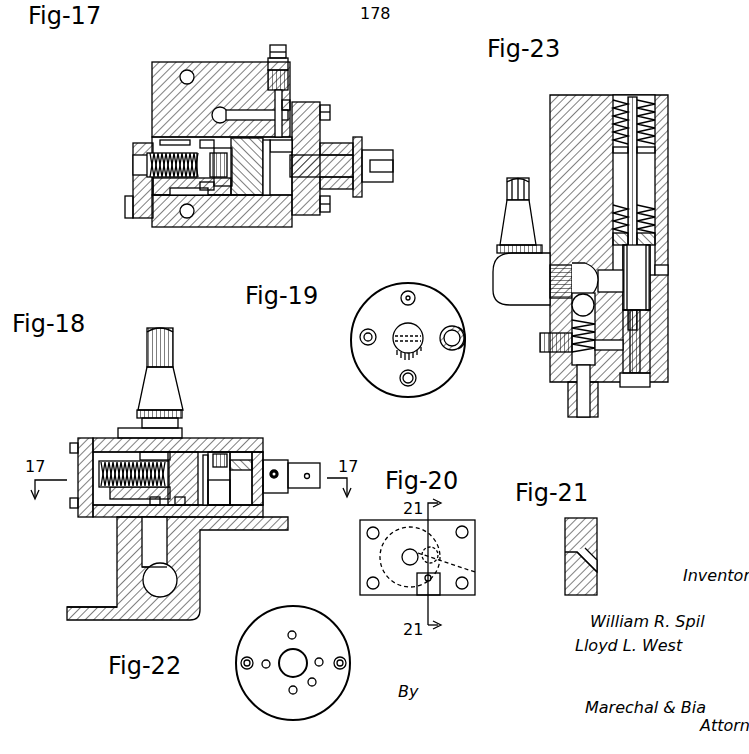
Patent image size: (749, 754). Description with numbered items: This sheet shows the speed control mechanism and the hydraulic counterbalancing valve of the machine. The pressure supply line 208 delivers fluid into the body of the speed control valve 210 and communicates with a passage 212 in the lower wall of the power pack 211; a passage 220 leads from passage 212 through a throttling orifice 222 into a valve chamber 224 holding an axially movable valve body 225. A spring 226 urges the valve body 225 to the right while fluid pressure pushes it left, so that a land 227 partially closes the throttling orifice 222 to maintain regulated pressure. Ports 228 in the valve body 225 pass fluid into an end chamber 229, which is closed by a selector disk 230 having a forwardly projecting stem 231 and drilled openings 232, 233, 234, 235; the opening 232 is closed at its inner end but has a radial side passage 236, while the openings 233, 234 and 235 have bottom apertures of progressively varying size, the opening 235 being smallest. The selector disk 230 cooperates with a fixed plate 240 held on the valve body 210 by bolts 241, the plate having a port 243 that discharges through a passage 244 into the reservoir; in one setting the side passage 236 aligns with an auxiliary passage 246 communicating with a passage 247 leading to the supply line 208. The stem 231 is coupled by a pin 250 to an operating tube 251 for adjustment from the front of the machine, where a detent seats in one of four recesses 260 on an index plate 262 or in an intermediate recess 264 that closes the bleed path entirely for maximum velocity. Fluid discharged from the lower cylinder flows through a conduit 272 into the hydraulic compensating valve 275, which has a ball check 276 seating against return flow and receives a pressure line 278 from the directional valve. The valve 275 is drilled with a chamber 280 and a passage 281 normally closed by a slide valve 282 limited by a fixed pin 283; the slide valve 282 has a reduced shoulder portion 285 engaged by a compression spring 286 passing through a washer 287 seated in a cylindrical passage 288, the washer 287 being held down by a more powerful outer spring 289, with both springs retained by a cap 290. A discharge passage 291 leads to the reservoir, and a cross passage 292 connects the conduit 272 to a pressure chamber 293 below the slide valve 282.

In FIG. 17, the pressure supply line 208 is at (212, 114).
In FIG. 18, the pressure supply line 208 is at (173, 336).
In FIG. 17, the speed control valve 210 is at (152, 66).
In FIG. 18, the power pack 211 is at (192, 600).
In FIG. 18, the passage 212 is at (177, 580).
In FIG. 18, the passage 220 is at (165, 550).
In FIG. 18, the throttling orifice 222 is at (125, 547).
In FIG. 18, the valve chamber 224 is at (150, 452).
In FIG. 18, the valve body 225 is at (110, 519).
In FIG. 17, the spring 226 is at (140, 163).
In FIG. 18, the spring 226 is at (97, 474).
In FIG. 18, the land 227 is at (172, 514).
In FIG. 17, the port 228 is at (228, 196).
In FIG. 18, the port 228 is at (195, 530).
In FIG. 18, the end chamber 229 is at (205, 455).
In FIG. 18, the selector disk 230 is at (228, 498).
In FIG. 19, the selector disk 230 is at (437, 298).
In FIG. 17, the stem 231 is at (394, 166).
In FIG. 18, the stem 231 is at (313, 489).
In FIG. 19, the stem 231 is at (416, 347).
In FIG. 17, the opening 232 is at (277, 196).
In FIG. 19, the opening 232 is at (462, 350).
In FIG. 19, the opening 233 is at (408, 386).
In FIG. 18, the opening 234 is at (228, 455).
In FIG. 19, the opening 234 is at (360, 338).
In FIG. 19, the opening 235 is at (408, 291).
In FIG. 17, the side passage 236 is at (288, 145).
In FIG. 19, the side passage 236 is at (460, 338).
In FIG. 23, the side passage 236 is at (540, 343).
In FIG. 17, the fixed plate 240 is at (312, 216).
In FIG. 20, the fixed plate 240 is at (470, 549).
In FIG. 21, the fixed plate 240 is at (598, 534).
In FIG. 17, the bolts 241 is at (331, 112).
In FIG. 18, the bolts 241 is at (268, 447).
In FIG. 18, the port 243 is at (250, 455).
In FIG. 20, the port 243 is at (475, 572).
In FIG. 21, the port 243 is at (567, 560).
In FIG. 20, the passage 244 is at (430, 580).
In FIG. 21, the passage 244 is at (594, 575).
In FIG. 17, the auxiliary passage 246 is at (283, 93).
In FIG. 17, the passage 247 is at (290, 106).
In FIG. 17, the pin 250 is at (360, 150).
In FIG. 17, the operating tube 251 is at (385, 182).
In FIG. 22, the recesses 260 is at (292, 631).
In FIG. 22, the index plate 262 is at (343, 653).
In FIG. 22, the intermediate recess 264 is at (316, 683).
In FIG. 23, the conduit 272 is at (585, 418).
In FIG. 23, the hydraulic compensating valve 275 is at (560, 108).
In FIG. 23, the ball check 276 is at (580, 307).
In FIG. 23, the pressure line 278 is at (518, 178).
In FIG. 23, the chamber 280 is at (560, 270).
In FIG. 23, the passage 281 is at (620, 282).
In FIG. 23, the slide valve 282 is at (650, 250).
In FIG. 23, the fixed pin 283 is at (640, 342).
In FIG. 23, the shoulder portion 285 is at (652, 240).
In FIG. 23, the compression spring 286 is at (648, 205).
In FIG. 23, the washer 287 is at (658, 210).
In FIG. 23, the cylindrical passage 288 is at (645, 172).
In FIG. 23, the outer spring 289 is at (655, 142).
In FIG. 23, the cap 290 is at (628, 100).
In FIG. 23, the discharge passage 291 is at (660, 270).
In FIG. 23, the cross passage 292 is at (606, 352).
In FIG. 23, the pressure chamber 293 is at (642, 328).